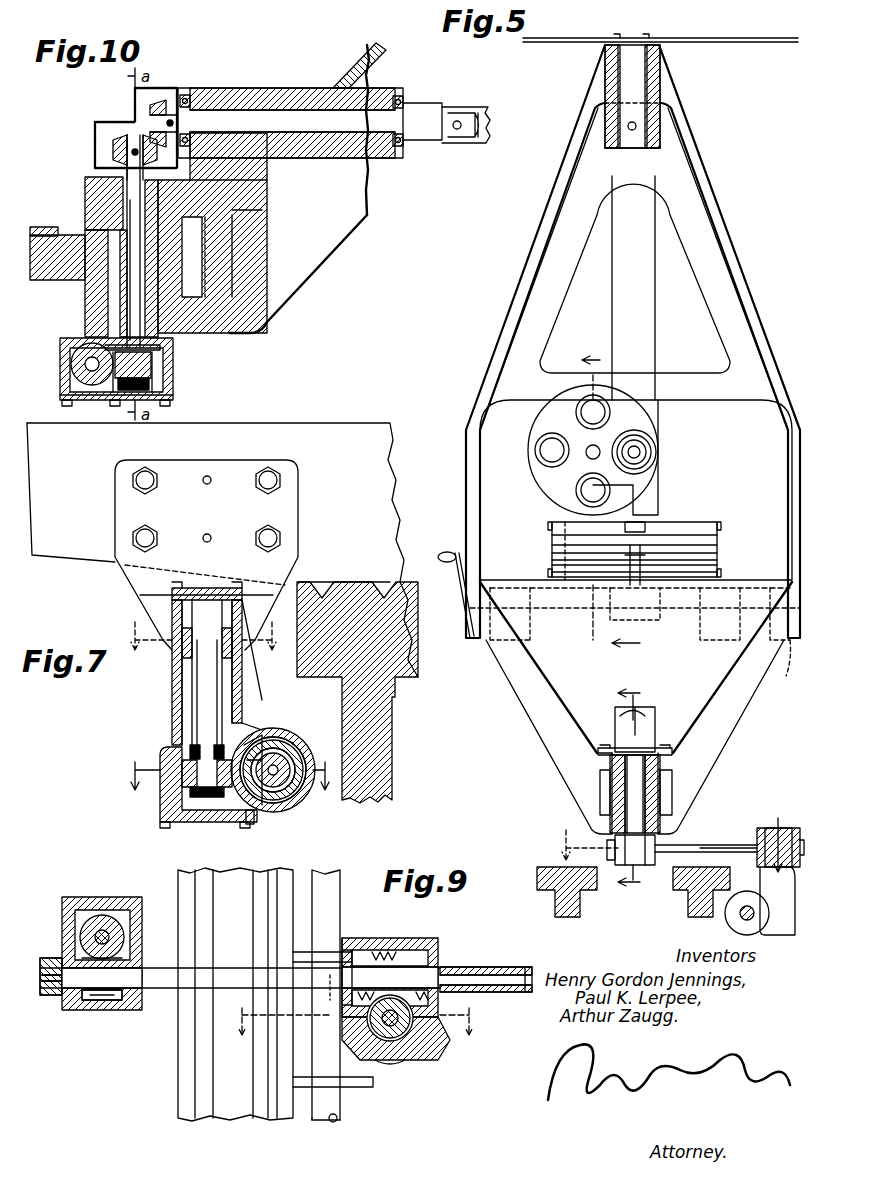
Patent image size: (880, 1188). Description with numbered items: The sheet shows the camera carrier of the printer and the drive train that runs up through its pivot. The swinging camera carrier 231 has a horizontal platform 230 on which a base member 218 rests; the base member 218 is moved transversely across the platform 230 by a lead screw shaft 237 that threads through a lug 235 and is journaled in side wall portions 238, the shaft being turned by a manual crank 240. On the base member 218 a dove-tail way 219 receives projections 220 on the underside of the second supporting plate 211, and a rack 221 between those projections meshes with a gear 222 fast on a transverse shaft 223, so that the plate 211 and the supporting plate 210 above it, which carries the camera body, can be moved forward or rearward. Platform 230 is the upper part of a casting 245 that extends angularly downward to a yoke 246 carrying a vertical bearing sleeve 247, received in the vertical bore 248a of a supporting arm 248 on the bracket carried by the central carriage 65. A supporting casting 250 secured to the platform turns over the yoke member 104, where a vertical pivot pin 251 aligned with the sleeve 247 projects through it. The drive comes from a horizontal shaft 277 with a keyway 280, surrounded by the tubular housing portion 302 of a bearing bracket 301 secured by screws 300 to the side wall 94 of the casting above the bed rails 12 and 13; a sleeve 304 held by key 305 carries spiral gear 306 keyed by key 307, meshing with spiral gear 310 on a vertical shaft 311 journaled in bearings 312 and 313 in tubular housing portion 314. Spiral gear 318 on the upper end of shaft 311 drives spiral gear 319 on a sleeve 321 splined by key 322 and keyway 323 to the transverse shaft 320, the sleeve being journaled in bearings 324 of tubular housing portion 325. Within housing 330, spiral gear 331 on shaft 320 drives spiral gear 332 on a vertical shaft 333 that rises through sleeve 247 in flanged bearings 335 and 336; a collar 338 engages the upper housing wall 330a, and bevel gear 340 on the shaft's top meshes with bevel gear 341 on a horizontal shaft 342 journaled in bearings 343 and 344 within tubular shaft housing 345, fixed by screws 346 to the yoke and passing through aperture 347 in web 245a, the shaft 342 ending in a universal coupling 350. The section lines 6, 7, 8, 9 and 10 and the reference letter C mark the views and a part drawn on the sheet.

In FIG. 5, the longitudinal bed rail 12 is at (686, 915).
In FIG. 7, the longitudinal bed rail 12 is at (395, 725).
In FIG. 9, the longitudinal bed rail 12 is at (185, 1080).
In FIG. 5, the longitudinal bed rail 13 is at (568, 917).
In FIG. 10, the central carriage 65 is at (348, 415).
In FIG. 7, the central carriage 65 is at (348, 415).
In FIG. 7, the side wall 94 is at (222, 550).
In FIG. 5, the yoke member 104 is at (672, 130).
In FIG. 5, the supporting plate 210 is at (640, 300).
In FIG. 5, the second supporting plate 211 is at (695, 560).
In FIG. 5, the base member 218 is at (553, 574).
In FIG. 5, the dove-tail way 219 is at (560, 557).
In FIG. 5, the projections 220 is at (555, 538).
In FIG. 5, the rack 221 is at (668, 540).
In FIG. 5, the gear 222 is at (560, 525).
In FIG. 5, the shaft 223 is at (690, 610).
In FIG. 5, the platform 230 is at (728, 582).
In FIG. 5, the swinging camera carrier 231 is at (508, 695).
In FIG. 5, the lug 235 is at (605, 625).
In FIG. 5, the lead screw shaft 237 is at (570, 598).
In FIG. 5, the side wall portions 238 is at (488, 650).
In FIG. 5, the manual crank 240 is at (448, 552).
In FIG. 10, the casting 245 is at (335, 233).
In FIG. 5, the casting 245 is at (540, 708).
In FIG. 10, the web 245a is at (367, 45).
In FIG. 10, the yoke 246 is at (212, 305).
In FIG. 5, the yoke 246 is at (580, 787).
In FIG. 10, the bearing sleeve 247 is at (210, 340).
In FIG. 5, the bearing sleeve 247 is at (660, 790).
In FIG. 10, the supporting arm 248 is at (70, 235).
In FIG. 5, the supporting arm 248 is at (660, 790).
In FIG. 10, the vertical bore 248a is at (58, 232).
In FIG. 5, the supporting casting 250 is at (720, 180).
In FIG. 5, the vertical pivot pin 251 is at (640, 82).
In FIG. 5, the horizontal shaft 277 is at (740, 920).
In FIG. 7, the horizontal shaft 277 is at (277, 790).
In FIG. 9, the horizontal shaft 277 is at (330, 1120).
In FIG. 7, the keyway 280 is at (254, 825).
In FIG. 7, the screws 300 is at (258, 535).
In FIG. 7, the bearing bracket 301 is at (160, 605).
In FIG. 7, the tubular housing portion 302 is at (295, 745).
In FIG. 7, the sleeve 304 is at (320, 735).
In FIG. 7, the key 305 is at (240, 790).
In FIG. 7, the spiral gear 306 is at (290, 795).
In FIG. 7, the key 307 is at (288, 810).
In FIG. 7, the spiral gear 310 is at (162, 785).
In FIG. 7, the vertical shaft 311 is at (205, 705).
In FIG. 9, the vertical shaft 311 is at (390, 1045).
In FIG. 7, the bearing 312 is at (178, 660).
In FIG. 7, the bearing 313 is at (182, 755).
In FIG. 7, the tubular housing portion 314 is at (178, 695).
In FIG. 7, the spiral gear 318 is at (244, 650).
In FIG. 9, the spiral gear 318 is at (395, 1040).
In FIG. 9, the spiral gear 319 is at (395, 952).
In FIG. 10, the shaft 320 is at (62, 385).
In FIG. 5, the shaft 320 is at (688, 845).
In FIG. 9, the shaft 320 is at (165, 992).
In FIG. 9, the sleeve 321 is at (432, 988).
In FIG. 9, the key 322 is at (366, 987).
In FIG. 9, the keyway 323 is at (320, 994).
In FIG. 9, the bearings 324 is at (380, 950).
In FIG. 9, the tubular housing portion 325 is at (352, 938).
In FIG. 10, the housing 330 is at (70, 332).
In FIG. 9, the housing 330 is at (66, 916).
In FIG. 10, the upper housing wall 330a is at (162, 347).
In FIG. 10, the spiral gear 331 is at (72, 357).
In FIG. 9, the spiral gear 331 is at (100, 1000).
In FIG. 10, the spiral gear 332 is at (150, 372).
In FIG. 9, the spiral gear 332 is at (105, 925).
In FIG. 10, the vertical shaft 333 is at (130, 282).
In FIG. 9, the vertical shaft 333 is at (96, 920).
In FIG. 10, the flanged bearing 335 is at (90, 180).
In FIG. 10, the flanged bearing 336 is at (88, 325).
In FIG. 10, the collar 338 is at (155, 360).
In FIG. 10, the bevel gear 340 is at (112, 150).
In FIG. 10, the bevel gear 341 is at (140, 108).
In FIG. 10, the horizontal shaft 342 is at (232, 117).
In FIG. 10, the bearing 343 is at (200, 78).
In FIG. 10, the bearing 344 is at (398, 96).
In FIG. 10, the tubular shaft housing 345 is at (262, 88).
In FIG. 5, the tubular shaft housing 345 is at (598, 751).
In FIG. 10, the screws 346 is at (245, 215).
In FIG. 5, the screws 346 is at (598, 740).
In FIG. 10, the aperture 347 is at (338, 85).
In FIG. 5, the aperture 347 is at (660, 722).
In FIG. 10, the universal coupling 350 is at (448, 96).
In FIG. 5, the section line 6- 6 is at (621, 502).
In FIG. 9, the section line 7- 7 is at (354, 1012).
In FIG. 7, the section line 8- 8 is at (227, 766).
In FIG. 5, the section line 9- 9 is at (675, 834).
In FIG. 7, the section line 9- 9 is at (201, 626).
In FIG. 5, the section line 10- 10 is at (644, 788).
In FIG. 5, the cam disc C is at (670, 422).